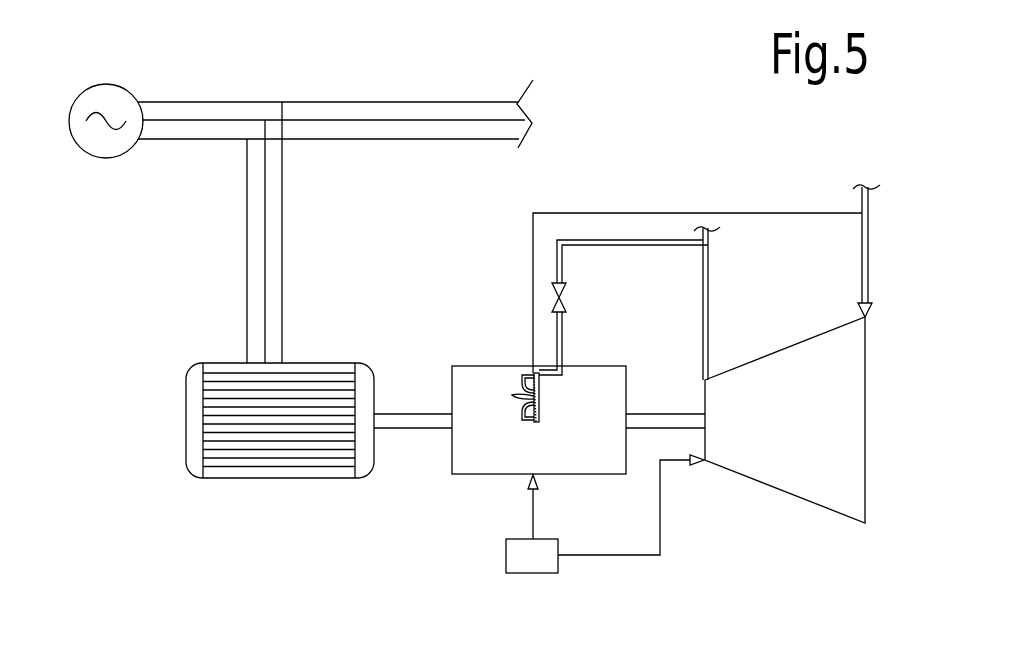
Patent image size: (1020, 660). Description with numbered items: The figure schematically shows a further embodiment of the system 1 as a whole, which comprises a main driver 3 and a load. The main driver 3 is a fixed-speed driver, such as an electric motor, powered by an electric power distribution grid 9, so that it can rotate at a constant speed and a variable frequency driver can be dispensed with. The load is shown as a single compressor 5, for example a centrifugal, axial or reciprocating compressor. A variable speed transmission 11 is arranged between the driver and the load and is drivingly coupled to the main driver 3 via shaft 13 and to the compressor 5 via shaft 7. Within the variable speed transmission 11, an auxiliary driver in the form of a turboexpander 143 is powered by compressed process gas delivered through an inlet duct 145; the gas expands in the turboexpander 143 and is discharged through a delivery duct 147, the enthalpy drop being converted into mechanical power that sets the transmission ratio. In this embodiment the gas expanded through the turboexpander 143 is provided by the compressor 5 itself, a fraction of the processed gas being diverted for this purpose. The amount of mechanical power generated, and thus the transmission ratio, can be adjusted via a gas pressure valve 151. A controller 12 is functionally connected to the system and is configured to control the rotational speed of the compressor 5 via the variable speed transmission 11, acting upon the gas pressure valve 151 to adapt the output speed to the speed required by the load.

The system 1 is at (659, 145).
The main driver 3 is at (231, 458).
The compressor 5 is at (793, 365).
The shaft 7 is at (668, 420).
The electric power distribution grid 9 is at (440, 139).
The variable speed transmission 11 is at (475, 375).
The controller 12 is at (506, 556).
The shaft 13 is at (415, 423).
The turboexpander 143 is at (538, 404).
The inlet duct 145 is at (560, 262).
The delivery duct 147 is at (616, 213).
The gas pressure valve 151 is at (565, 300).